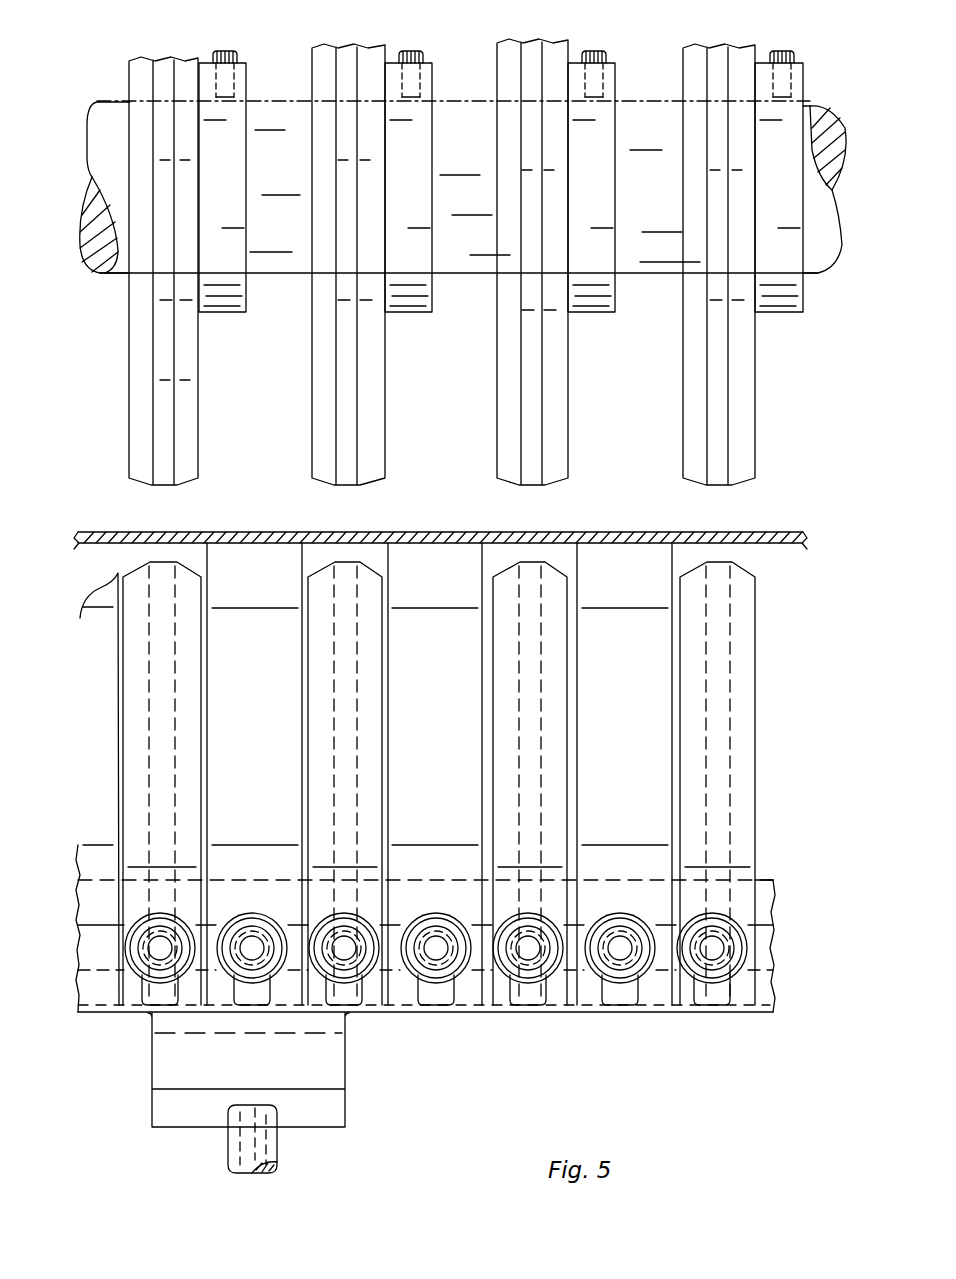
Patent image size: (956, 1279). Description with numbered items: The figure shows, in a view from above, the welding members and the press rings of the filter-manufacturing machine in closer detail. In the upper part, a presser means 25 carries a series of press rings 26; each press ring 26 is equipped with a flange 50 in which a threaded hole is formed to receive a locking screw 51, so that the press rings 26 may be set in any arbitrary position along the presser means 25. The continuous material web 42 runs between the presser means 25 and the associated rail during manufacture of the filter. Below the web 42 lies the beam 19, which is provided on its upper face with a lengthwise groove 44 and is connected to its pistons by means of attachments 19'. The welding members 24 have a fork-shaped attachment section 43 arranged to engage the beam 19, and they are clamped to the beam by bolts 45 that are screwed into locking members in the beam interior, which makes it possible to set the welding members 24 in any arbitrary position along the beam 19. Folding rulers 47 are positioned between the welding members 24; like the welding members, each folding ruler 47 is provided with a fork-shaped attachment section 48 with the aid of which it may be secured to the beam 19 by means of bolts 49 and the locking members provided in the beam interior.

The beam 19 is at (437, 792).
The attachment 19' is at (218, 1093).
The welding member 24 is at (183, 770).
The presser means 25 is at (462, 276).
The press ring 26 is at (186, 415).
The continuous material web 42 is at (658, 532).
The fork-shaped attachment section 43 is at (137, 1003).
The lengthwise groove 44 is at (763, 930).
The bolt 45 is at (530, 960).
The folding ruler 47 is at (270, 671).
The fork-shaped attachment section 48 is at (468, 1000).
The bolt 49 is at (434, 955).
The flange 50 is at (230, 313).
The locking screw 51 is at (230, 52).